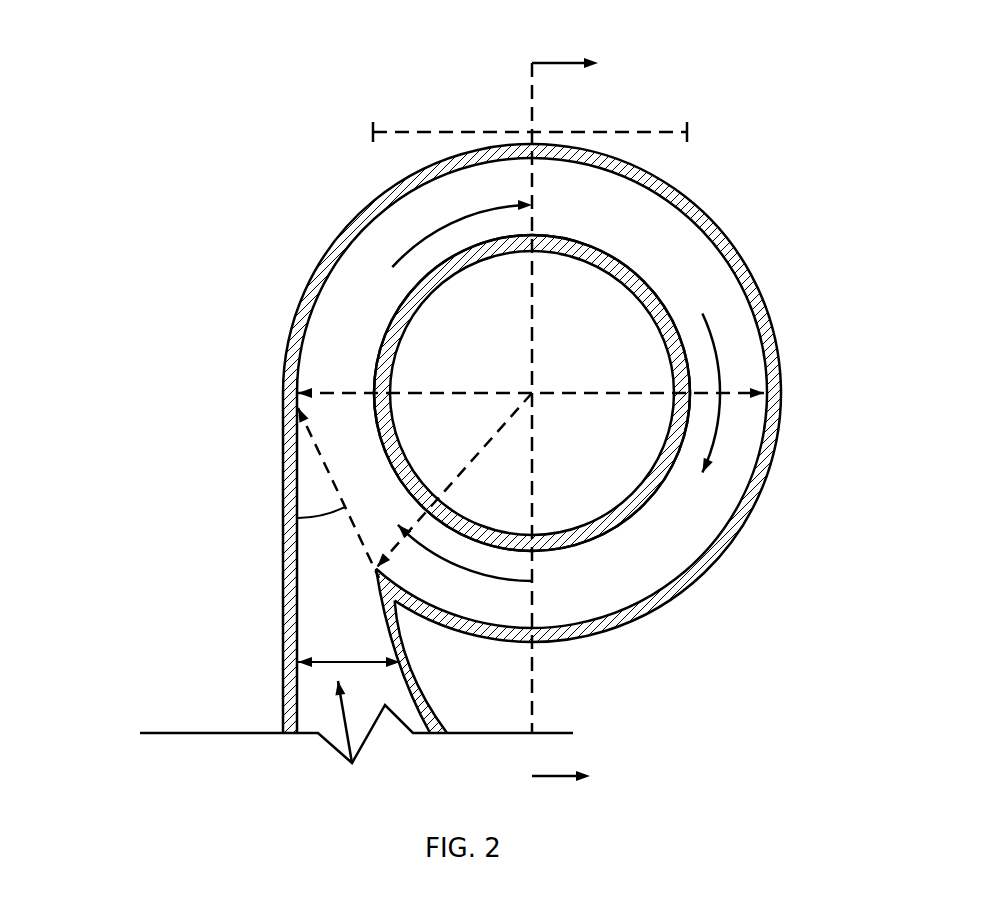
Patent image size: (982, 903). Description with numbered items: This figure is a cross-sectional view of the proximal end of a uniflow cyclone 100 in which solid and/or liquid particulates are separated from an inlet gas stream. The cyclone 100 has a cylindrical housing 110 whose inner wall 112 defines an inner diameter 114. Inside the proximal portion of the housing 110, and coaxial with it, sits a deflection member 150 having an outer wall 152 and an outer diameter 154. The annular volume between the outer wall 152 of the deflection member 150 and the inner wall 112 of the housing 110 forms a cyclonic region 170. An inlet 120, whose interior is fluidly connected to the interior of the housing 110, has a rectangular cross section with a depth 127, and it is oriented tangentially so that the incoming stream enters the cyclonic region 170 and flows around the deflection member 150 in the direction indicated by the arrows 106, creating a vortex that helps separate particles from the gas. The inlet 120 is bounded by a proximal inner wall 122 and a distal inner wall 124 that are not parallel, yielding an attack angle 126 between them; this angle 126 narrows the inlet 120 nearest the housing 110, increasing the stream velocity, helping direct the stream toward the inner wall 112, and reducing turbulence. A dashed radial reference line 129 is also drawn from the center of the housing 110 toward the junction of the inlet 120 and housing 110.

The cyclone 100 is at (406, 393).
The arrows 106 is at (393, 268).
The housing 110 is at (470, 387).
The inner wall 112 is at (303, 300).
The inner diameter 114 is at (563, 392).
The inlet 120 is at (323, 563).
The proximal inner wall 122 is at (290, 605).
The distal inner wall 124 is at (400, 656).
The attack angle 126 is at (298, 514).
The depth 127 is at (352, 661).
The radial line to tongue 129 is at (480, 432).
The deflection member 150 is at (532, 382).
The outer wall 152 is at (565, 247).
The outer diameter 154 is at (583, 132).
The cyclonic region 170 is at (352, 362).